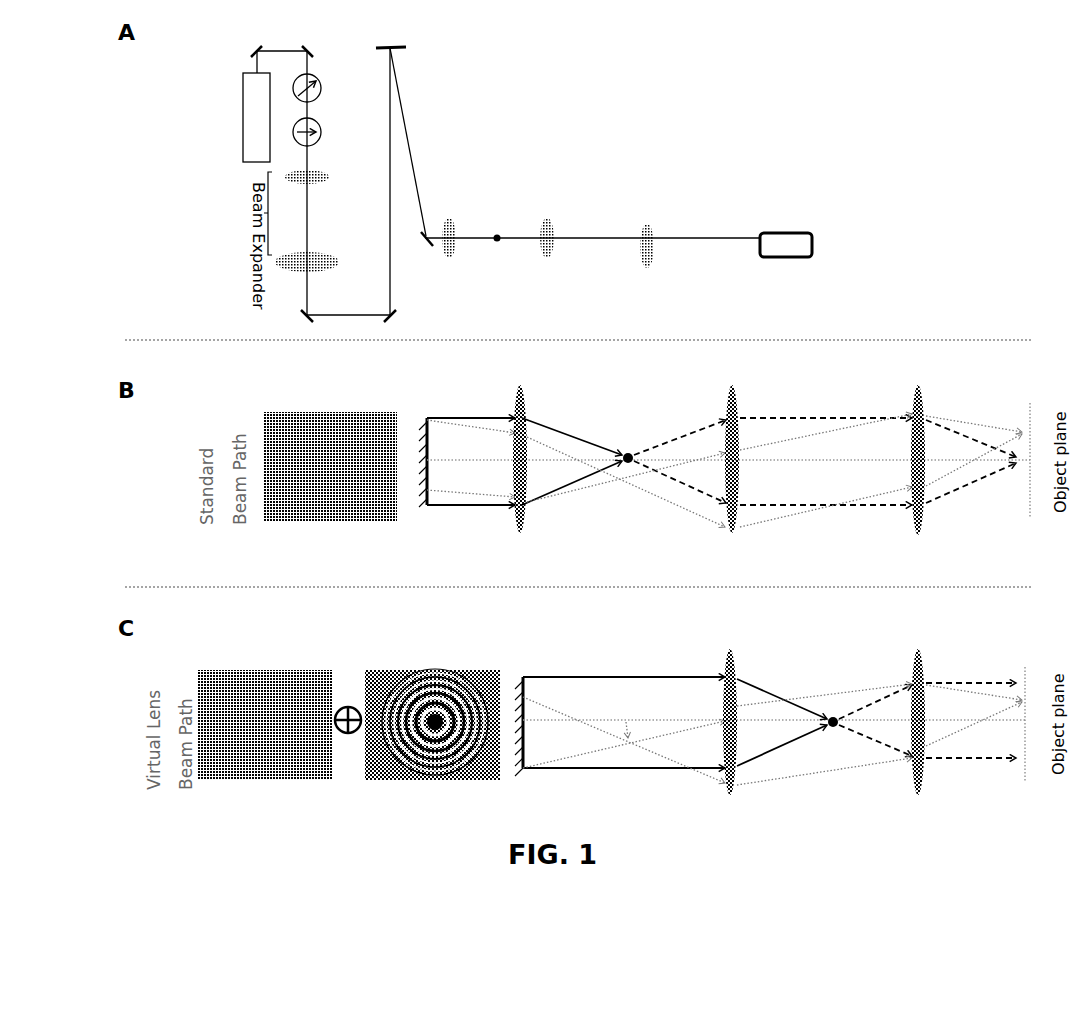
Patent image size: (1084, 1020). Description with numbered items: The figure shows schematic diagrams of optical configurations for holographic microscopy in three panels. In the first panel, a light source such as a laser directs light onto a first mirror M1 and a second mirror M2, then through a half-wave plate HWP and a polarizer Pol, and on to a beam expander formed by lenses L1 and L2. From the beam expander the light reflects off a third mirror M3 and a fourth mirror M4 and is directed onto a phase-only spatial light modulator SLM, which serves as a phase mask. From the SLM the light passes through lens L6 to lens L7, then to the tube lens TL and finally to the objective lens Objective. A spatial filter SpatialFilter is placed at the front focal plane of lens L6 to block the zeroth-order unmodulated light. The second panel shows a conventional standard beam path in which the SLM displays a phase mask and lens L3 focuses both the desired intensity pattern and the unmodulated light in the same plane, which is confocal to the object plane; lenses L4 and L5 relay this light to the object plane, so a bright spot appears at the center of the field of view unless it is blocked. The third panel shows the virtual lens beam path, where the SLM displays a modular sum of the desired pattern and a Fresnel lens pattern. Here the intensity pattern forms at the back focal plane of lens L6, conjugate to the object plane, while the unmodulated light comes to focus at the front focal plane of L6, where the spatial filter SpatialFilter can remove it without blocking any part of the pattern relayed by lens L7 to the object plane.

The first mirror M1 is at (237, 39).
The second mirror M2 is at (318, 43).
The third mirror M3 is at (292, 323).
The fourth mirror M4 is at (404, 323).
The spatial light modulator SLM is at (385, 27).
The half-wave plate HWP is at (323, 88).
The polarizer Pol is at (319, 132).
The lens L1 is at (315, 175).
The lens L2 is at (310, 253).
The lens L3 is at (532, 454).
The lens L4 is at (744, 454).
The lens L5 is at (930, 455).
The lens L6 is at (458, 236).
The lens L7 is at (560, 236).
The tube lens TL is at (655, 241).
The objective lens Objective is at (794, 230).
The spatial filter SpatialFilter is at (493, 222).